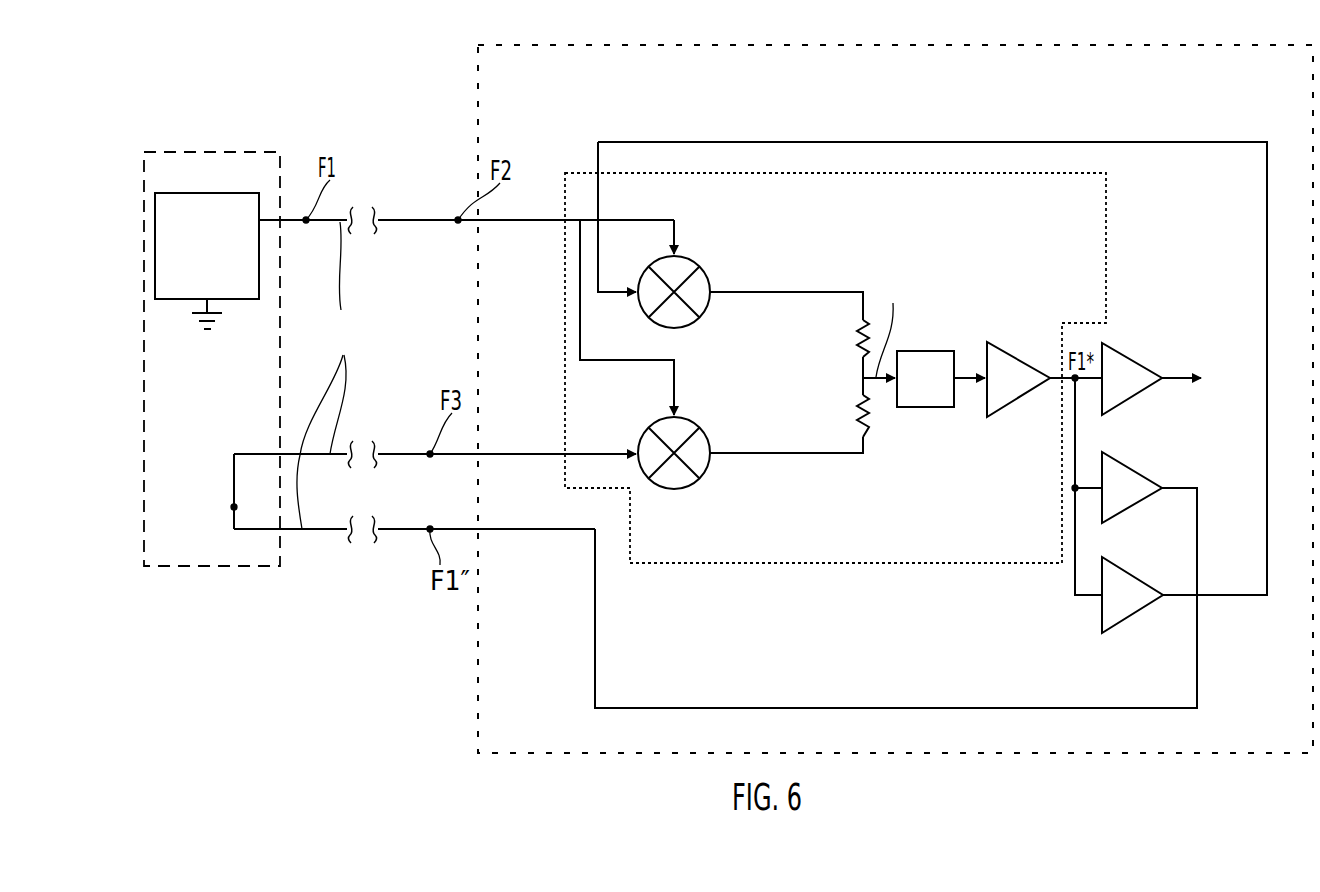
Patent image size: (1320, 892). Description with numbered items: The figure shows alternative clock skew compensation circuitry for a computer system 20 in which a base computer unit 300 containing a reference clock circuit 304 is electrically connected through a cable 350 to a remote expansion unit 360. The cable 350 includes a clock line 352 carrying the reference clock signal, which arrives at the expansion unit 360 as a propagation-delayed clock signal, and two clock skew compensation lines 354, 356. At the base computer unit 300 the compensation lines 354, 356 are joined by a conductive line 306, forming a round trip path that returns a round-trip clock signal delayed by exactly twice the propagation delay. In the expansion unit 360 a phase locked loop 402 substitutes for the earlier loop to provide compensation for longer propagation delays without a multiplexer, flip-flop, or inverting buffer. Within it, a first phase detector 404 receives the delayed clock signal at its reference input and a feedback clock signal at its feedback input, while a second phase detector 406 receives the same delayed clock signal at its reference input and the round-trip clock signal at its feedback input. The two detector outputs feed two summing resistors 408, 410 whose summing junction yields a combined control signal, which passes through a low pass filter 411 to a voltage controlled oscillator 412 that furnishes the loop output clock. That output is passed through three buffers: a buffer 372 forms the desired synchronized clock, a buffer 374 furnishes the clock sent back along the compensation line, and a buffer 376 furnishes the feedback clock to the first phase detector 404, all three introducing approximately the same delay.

The computer system 20 is at (624, 30).
The base computer unit 300 is at (220, 118).
The reference clock circuit 304 is at (243, 299).
The conductive line 306 is at (234, 460).
The cable 350 is at (405, 339).
The clock line 352 is at (500, 220).
The clock skew compensation line 354 is at (512, 454).
The clock skew compensation line 356 is at (510, 529).
The expansion unit 360 is at (800, 45).
The buffer 372 is at (1135, 351).
The buffer 374 is at (1135, 461).
The buffer 376 is at (1132, 572).
The phase locked loop 402 is at (740, 563).
The phase detector 404 is at (711, 280).
The phase detector 406 is at (674, 489).
The summing resistor 408 is at (858, 333).
The summing resistor 410 is at (866, 425).
The low pass filter 411 is at (930, 407).
The voltage controlled oscillator 412 is at (1013, 400).